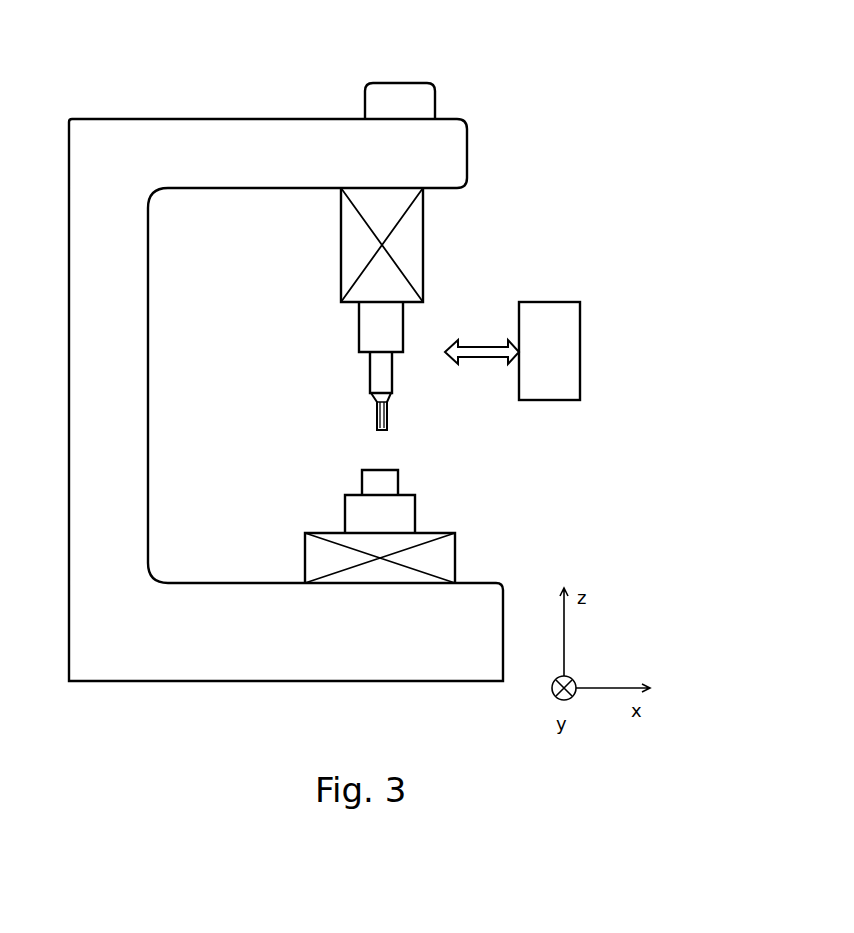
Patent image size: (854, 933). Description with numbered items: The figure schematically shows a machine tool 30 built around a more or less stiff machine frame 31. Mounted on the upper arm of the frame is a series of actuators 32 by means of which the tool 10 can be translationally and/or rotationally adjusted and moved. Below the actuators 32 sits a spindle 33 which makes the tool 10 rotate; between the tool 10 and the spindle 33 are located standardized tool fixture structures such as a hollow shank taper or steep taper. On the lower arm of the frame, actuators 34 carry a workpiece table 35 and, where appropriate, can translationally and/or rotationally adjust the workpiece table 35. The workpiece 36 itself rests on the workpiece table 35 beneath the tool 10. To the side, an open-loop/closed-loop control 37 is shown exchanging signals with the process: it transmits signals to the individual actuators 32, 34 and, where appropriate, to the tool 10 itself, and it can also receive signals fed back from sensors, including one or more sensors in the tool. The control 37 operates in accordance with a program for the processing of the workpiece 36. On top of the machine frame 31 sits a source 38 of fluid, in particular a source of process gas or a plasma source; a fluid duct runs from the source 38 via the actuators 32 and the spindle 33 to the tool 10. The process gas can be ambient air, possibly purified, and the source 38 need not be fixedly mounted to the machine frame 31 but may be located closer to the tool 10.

The machine tool 30 is at (331, 99).
The machine frame 31 is at (452, 156).
The actuators 32 is at (412, 252).
The spindle 33 is at (371, 328).
The tool 10 is at (414, 358).
The actuators for workpiece table 34 is at (443, 559).
The workpiece table 35 is at (404, 519).
The workpiece 36 is at (390, 479).
The open-loop/closed-loop control 37 is at (544, 386).
The source of fluid 38 is at (420, 101).